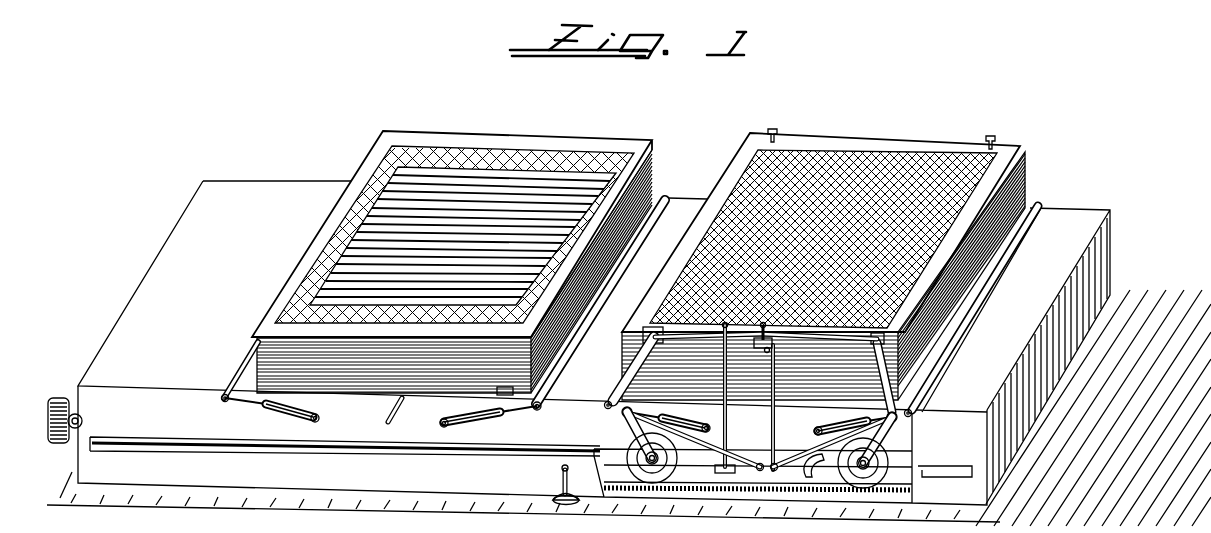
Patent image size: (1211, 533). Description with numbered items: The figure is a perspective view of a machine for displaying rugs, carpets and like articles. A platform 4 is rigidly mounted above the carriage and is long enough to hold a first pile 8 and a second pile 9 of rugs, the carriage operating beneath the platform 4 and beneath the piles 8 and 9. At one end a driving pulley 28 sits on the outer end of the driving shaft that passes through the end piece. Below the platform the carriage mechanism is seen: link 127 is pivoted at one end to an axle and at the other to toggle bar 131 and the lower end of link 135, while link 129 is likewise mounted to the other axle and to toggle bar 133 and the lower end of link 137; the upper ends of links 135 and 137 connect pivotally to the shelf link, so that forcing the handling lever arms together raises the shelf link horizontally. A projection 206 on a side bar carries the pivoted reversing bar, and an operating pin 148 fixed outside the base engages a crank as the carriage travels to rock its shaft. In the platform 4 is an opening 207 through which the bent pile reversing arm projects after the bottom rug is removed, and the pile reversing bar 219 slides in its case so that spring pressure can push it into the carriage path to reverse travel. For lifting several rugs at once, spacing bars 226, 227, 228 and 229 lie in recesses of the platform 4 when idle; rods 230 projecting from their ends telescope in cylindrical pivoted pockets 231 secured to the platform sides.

The platform 4 is at (594, 343).
The first pile 8 is at (496, 176).
The second pile 9 is at (847, 160).
The driving pulley 28 is at (62, 397).
The spacing bar 226 is at (240, 370).
The rod 230 is at (240, 403).
The cylindrical pivoted pocket 231 is at (840, 421).
The pile reversing bar 219 is at (395, 416).
The projection 206 is at (506, 396).
The opening 207 is at (546, 400).
The spacing bar 227 is at (646, 232).
The spacing bar 228 is at (644, 330).
The spacing bar 229 is at (1012, 255).
The link 135 is at (636, 388).
The link 137 is at (899, 390).
The link 127 is at (636, 440).
The toggle bar 131 is at (651, 424).
The link 129 is at (887, 436).
The toggle bar 133 is at (848, 452).
The operating pin 148 is at (558, 475).